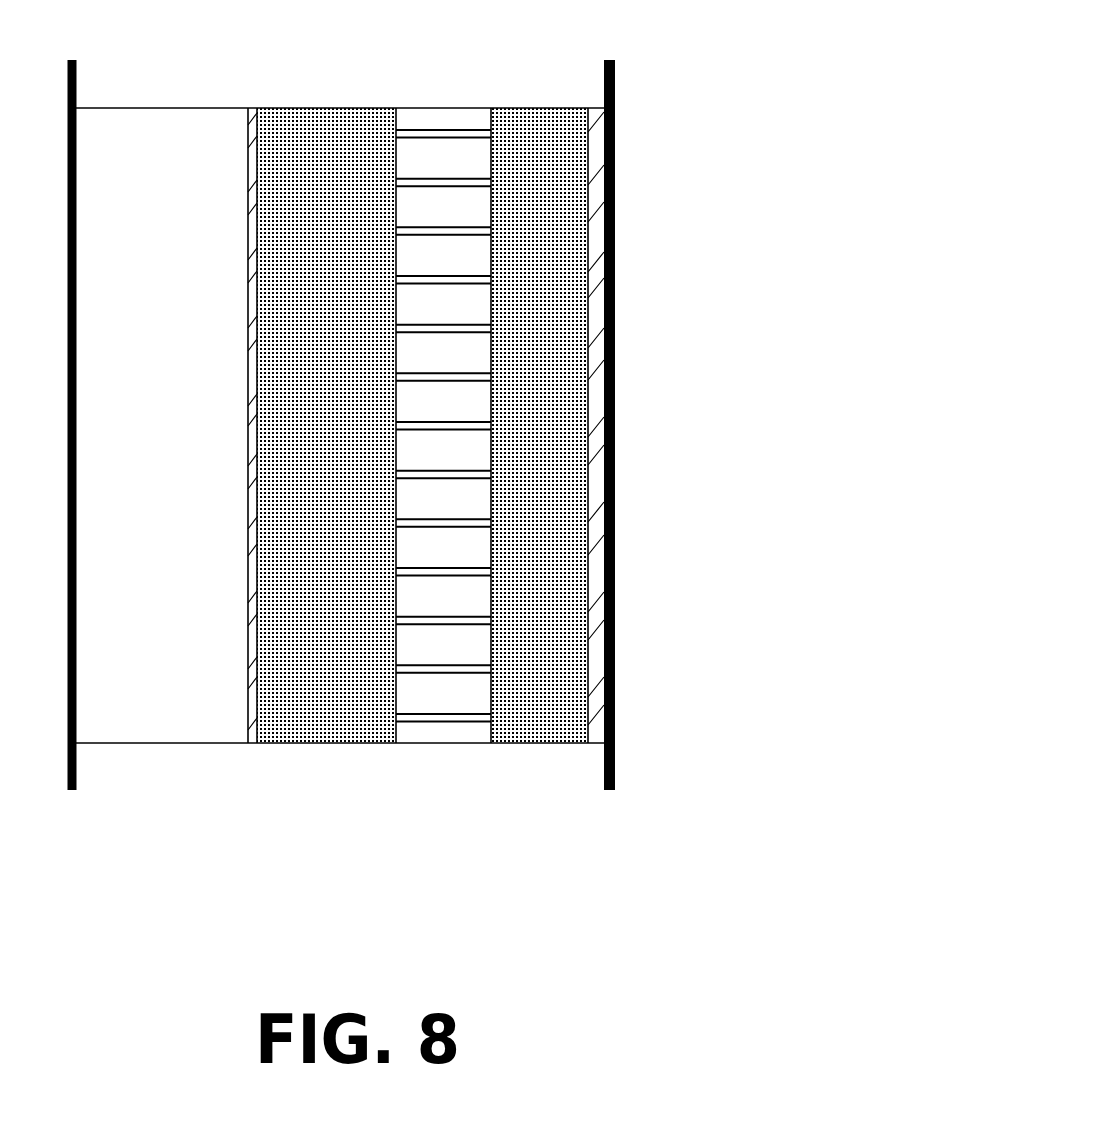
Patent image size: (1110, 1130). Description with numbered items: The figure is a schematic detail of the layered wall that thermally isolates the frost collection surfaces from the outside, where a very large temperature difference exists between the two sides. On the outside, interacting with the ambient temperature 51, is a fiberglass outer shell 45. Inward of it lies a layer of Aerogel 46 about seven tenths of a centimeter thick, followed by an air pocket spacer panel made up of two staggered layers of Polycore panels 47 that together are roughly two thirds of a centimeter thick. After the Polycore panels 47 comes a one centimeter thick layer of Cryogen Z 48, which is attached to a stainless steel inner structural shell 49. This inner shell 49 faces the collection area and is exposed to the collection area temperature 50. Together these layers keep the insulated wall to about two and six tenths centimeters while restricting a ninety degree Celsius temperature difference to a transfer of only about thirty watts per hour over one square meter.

The fiberglass outer shell 45 is at (612, 106).
The layer of Aerogel 46 is at (550, 240).
The Polycore panels 47 is at (448, 407).
The layer of Cryogen Z 48 is at (332, 413).
The stainless steel inner structural shell 49 is at (258, 578).
The collection area temperature 50 is at (203, 650).
The ambient temperature 51 is at (853, 820).